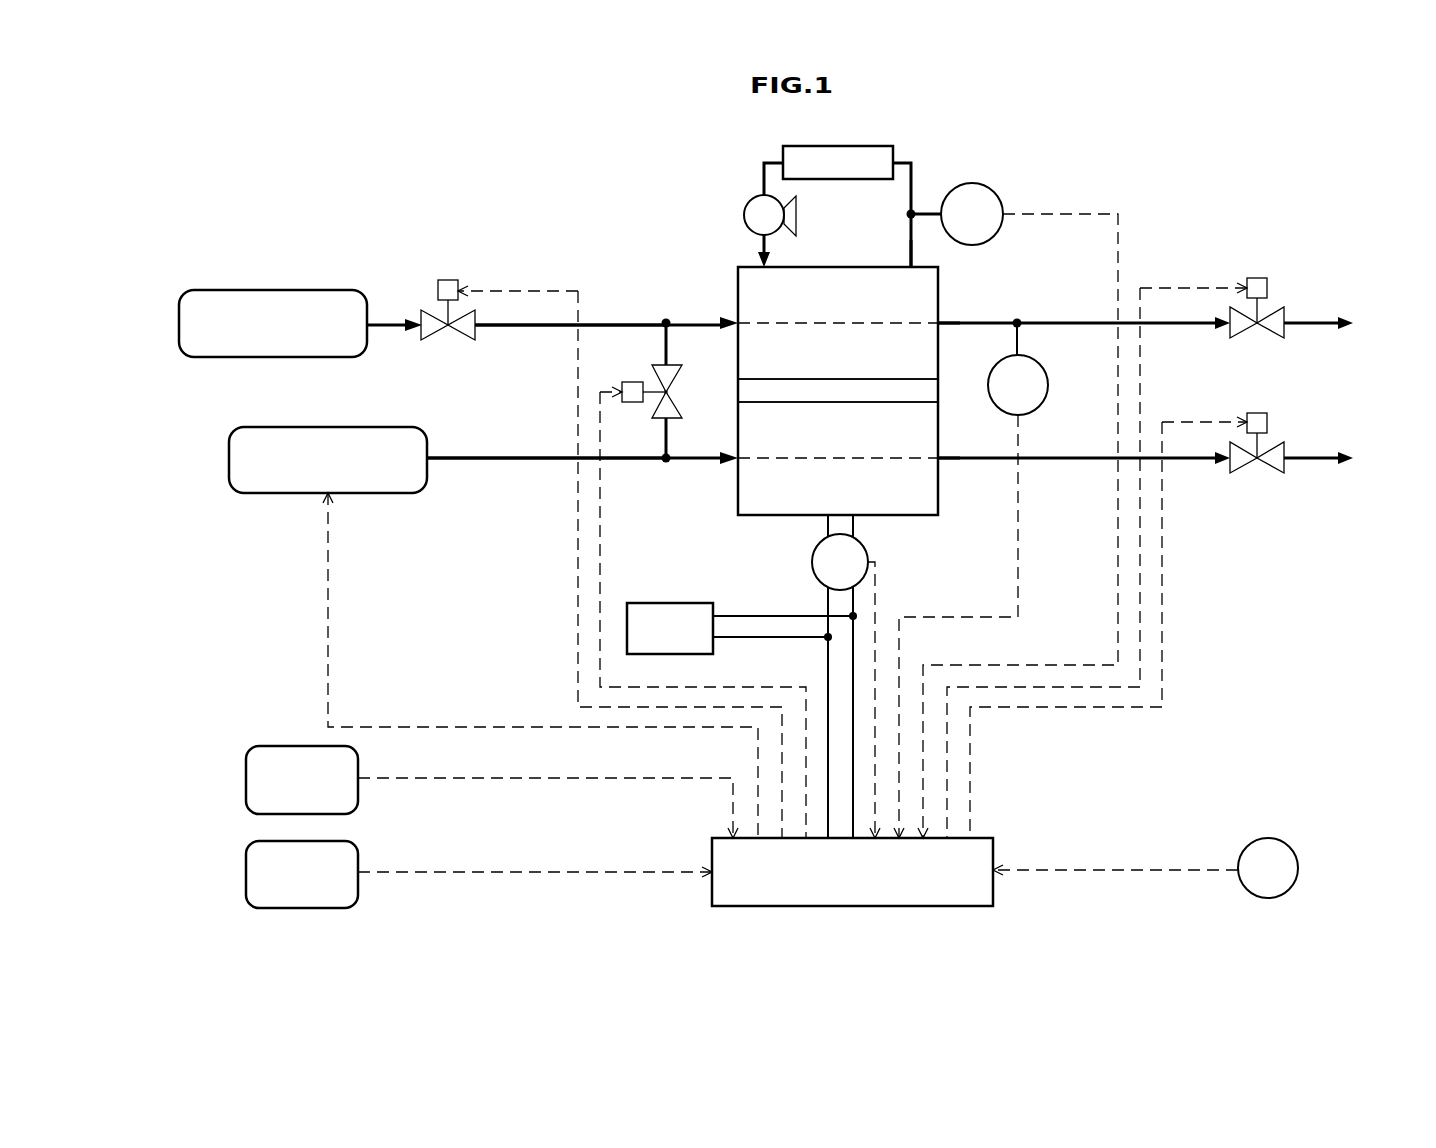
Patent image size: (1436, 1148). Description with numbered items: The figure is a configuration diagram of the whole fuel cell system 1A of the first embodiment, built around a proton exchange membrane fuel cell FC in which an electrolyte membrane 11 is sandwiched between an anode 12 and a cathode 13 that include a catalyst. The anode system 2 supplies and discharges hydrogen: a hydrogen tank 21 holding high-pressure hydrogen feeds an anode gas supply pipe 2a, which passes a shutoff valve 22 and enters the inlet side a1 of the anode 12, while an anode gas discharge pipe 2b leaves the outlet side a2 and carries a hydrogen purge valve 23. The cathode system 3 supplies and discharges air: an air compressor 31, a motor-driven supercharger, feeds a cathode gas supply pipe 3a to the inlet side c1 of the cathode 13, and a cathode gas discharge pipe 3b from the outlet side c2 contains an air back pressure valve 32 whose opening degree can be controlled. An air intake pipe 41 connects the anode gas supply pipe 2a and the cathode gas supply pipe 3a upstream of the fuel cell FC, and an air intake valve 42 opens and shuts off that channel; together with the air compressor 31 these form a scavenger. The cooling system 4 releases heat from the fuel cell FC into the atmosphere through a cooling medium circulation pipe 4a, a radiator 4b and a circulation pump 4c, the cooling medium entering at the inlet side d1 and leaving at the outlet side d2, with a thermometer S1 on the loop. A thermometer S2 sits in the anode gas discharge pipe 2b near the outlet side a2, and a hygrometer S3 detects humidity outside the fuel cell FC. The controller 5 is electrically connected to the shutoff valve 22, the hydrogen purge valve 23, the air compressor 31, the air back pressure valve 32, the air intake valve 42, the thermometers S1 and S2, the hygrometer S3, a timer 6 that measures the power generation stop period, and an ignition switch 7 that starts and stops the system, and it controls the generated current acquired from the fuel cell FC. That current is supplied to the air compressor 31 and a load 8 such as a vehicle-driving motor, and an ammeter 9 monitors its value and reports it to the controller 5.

The fuel cell system 1A is at (1087, 112).
The anode system 2 is at (380, 262).
The anode gas supply pipe 2a is at (636, 323).
The anode gas discharge pipe 2b is at (1046, 323).
The hydrogen tank 21 is at (248, 357).
The shutoff valve 22 is at (458, 340).
The hydrogen purge valve 23 is at (1270, 309).
The cathode system 3 is at (382, 406).
The cathode gas supply pipe 3a is at (483, 460).
The cathode gas discharge pipe 3b is at (1046, 460).
The air compressor 31 is at (279, 494).
The air back pressure valve 32 is at (1270, 444).
The cooling system 4 is at (841, 183).
The cooling medium circulation pipe 4a is at (783, 163).
The radiator 4b is at (860, 146).
The circulation pump 4c is at (747, 215).
The air intake pipe 41 is at (670, 336).
The air intake valve 42 is at (652, 372).
The controller 5 is at (995, 852).
The timer 6 is at (274, 814).
The ignition switch 7 is at (274, 908).
The load 8 is at (657, 603).
The ammeter 9 is at (812, 560).
The electrolyte membrane 11 is at (939, 390).
The anode 12 is at (939, 356).
The cathode 13 is at (939, 436).
The inlet side of the anode a1 is at (737, 313).
The outlet side of the anode a2 is at (940, 323).
The inlet side of the cathode c1 is at (737, 464).
The outlet side of the cathode c2 is at (942, 460).
The inlet side d1 is at (760, 265).
The outlet side d2 is at (913, 265).
The thermometer S1 is at (1001, 200).
The thermometer S2 is at (1048, 392).
The hygrometer S3 is at (1270, 838).
The fuel cell FC is at (893, 516).